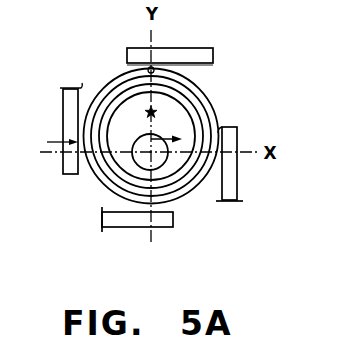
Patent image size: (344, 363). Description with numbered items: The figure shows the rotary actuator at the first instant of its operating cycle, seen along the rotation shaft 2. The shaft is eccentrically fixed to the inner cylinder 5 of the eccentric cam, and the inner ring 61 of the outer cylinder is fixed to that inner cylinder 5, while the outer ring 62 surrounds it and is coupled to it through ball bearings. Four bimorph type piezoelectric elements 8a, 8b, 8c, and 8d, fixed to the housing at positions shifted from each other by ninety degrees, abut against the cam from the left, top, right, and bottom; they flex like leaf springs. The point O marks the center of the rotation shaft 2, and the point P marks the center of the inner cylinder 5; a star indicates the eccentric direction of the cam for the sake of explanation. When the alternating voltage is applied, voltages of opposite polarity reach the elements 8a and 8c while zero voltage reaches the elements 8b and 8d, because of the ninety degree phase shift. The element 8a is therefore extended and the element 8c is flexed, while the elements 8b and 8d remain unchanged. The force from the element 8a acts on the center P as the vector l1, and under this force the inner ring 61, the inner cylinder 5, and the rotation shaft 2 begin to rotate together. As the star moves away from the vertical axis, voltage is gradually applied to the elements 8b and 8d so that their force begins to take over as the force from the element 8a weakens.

The rotation shaft 2 is at (152, 173).
The inner cylinder 5 is at (167, 165).
The center of the rotation shaft O is at (152, 153).
The center of the inner cylinder P is at (178, 134).
The force vector l1 is at (151, 139).
The piezoelectric element 8a is at (75, 119).
The piezoelectric element 8b is at (178, 55).
The piezoelectric element 8c is at (240, 140).
The piezoelectric element 8d is at (121, 222).
The inner ring 61 is at (172, 160).
The outer ring 62 is at (195, 155).